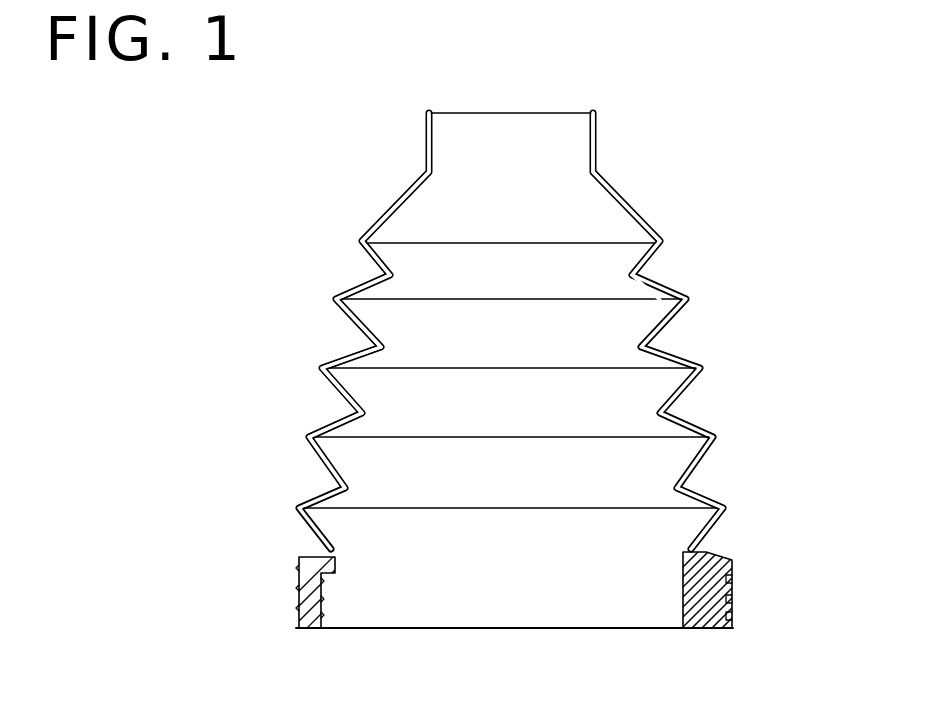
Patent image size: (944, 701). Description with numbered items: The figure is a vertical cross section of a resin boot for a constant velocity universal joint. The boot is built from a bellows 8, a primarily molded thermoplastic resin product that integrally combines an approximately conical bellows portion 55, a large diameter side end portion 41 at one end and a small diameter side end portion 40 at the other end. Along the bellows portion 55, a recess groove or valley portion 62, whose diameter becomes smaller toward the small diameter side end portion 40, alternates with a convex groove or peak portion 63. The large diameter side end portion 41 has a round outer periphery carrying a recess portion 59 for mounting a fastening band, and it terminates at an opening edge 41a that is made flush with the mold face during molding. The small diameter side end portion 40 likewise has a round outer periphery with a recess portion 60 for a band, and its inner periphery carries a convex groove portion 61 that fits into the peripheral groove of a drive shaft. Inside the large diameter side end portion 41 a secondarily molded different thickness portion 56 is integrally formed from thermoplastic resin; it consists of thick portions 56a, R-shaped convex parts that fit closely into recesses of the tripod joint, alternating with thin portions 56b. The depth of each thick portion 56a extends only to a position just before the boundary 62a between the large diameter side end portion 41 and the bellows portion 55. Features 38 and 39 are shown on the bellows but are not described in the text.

The bellows 8 is at (740, 430).
The peak portion of bellows 38 is at (662, 236).
The valley portion of bellows 39 is at (646, 277).
The small diameter side end portion 40 is at (598, 141).
The large diameter side end portion 41 is at (290, 580).
The opening edge 41a is at (302, 629).
The bellows portion 55 is at (680, 337).
The different thickness portion 56 is at (668, 581).
The thick portion 56a is at (683, 591).
The thin portion 56b is at (321, 594).
The recess portion 59 is at (300, 599).
The recess portion 60 is at (422, 150).
The convex groove portion 61 is at (598, 150).
The recess groove portion 62 is at (376, 272).
The boundary 62a is at (717, 543).
The convex groove portion 63 is at (332, 301).